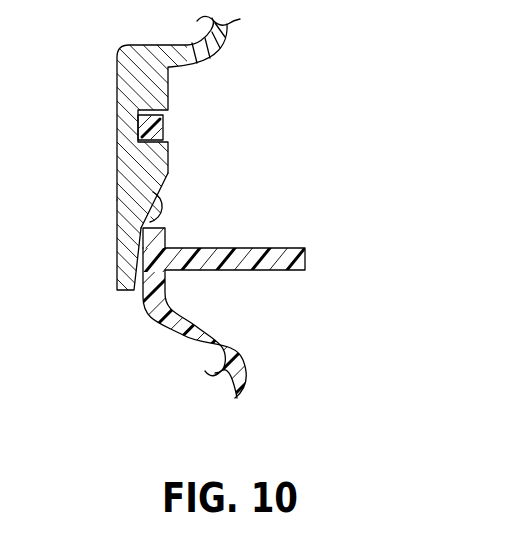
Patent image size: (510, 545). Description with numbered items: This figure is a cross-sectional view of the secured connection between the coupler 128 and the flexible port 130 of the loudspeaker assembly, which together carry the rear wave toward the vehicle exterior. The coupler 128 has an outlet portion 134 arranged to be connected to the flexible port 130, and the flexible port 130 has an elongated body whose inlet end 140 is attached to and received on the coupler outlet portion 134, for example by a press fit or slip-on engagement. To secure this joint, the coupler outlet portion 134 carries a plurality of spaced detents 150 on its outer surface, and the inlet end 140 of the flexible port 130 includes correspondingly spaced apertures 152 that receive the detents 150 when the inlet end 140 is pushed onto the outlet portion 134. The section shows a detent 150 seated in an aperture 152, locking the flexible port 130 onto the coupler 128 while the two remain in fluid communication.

The coupler 128 is at (178, 98).
The flexible port 130 is at (266, 280).
The outlet portion 134 is at (105, 245).
The inlet end 140 is at (167, 229).
The detents 150 is at (157, 189).
The apertures 152 is at (150, 193).